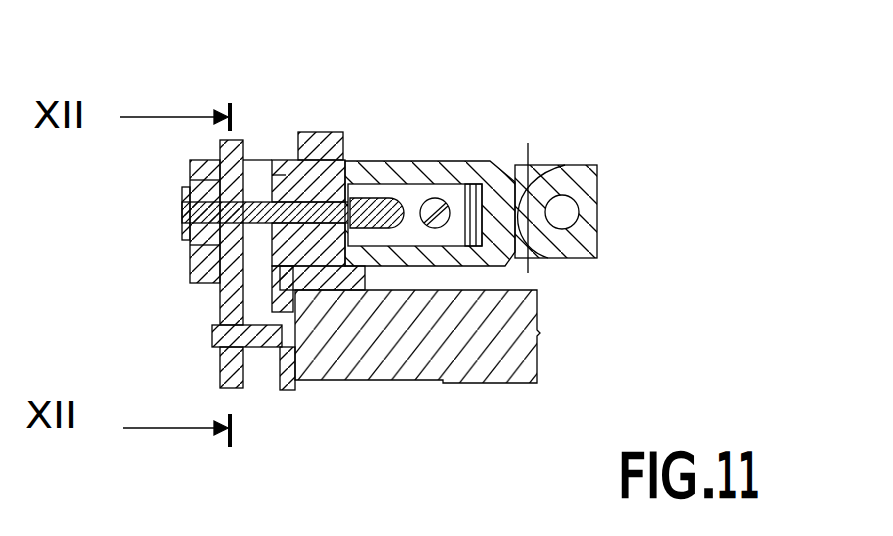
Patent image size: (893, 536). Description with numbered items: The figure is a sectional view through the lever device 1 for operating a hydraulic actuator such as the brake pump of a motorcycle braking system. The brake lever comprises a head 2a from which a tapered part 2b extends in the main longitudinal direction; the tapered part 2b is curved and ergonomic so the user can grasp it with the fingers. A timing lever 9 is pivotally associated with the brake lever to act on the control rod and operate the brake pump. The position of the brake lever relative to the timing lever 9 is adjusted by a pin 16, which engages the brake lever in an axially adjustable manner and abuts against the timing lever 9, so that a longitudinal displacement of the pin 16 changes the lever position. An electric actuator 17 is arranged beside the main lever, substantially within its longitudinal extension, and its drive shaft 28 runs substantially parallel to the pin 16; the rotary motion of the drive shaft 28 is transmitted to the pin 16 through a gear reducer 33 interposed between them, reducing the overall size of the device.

The lever device 1 is at (289, 90).
The pin 16 is at (370, 160).
The timing lever 9 is at (412, 198).
The head 2a is at (487, 160).
The tapered part 2b is at (575, 196).
The gear reducer 33 is at (198, 295).
The drive shaft 28 is at (265, 337).
The electric actuator 17 is at (362, 348).